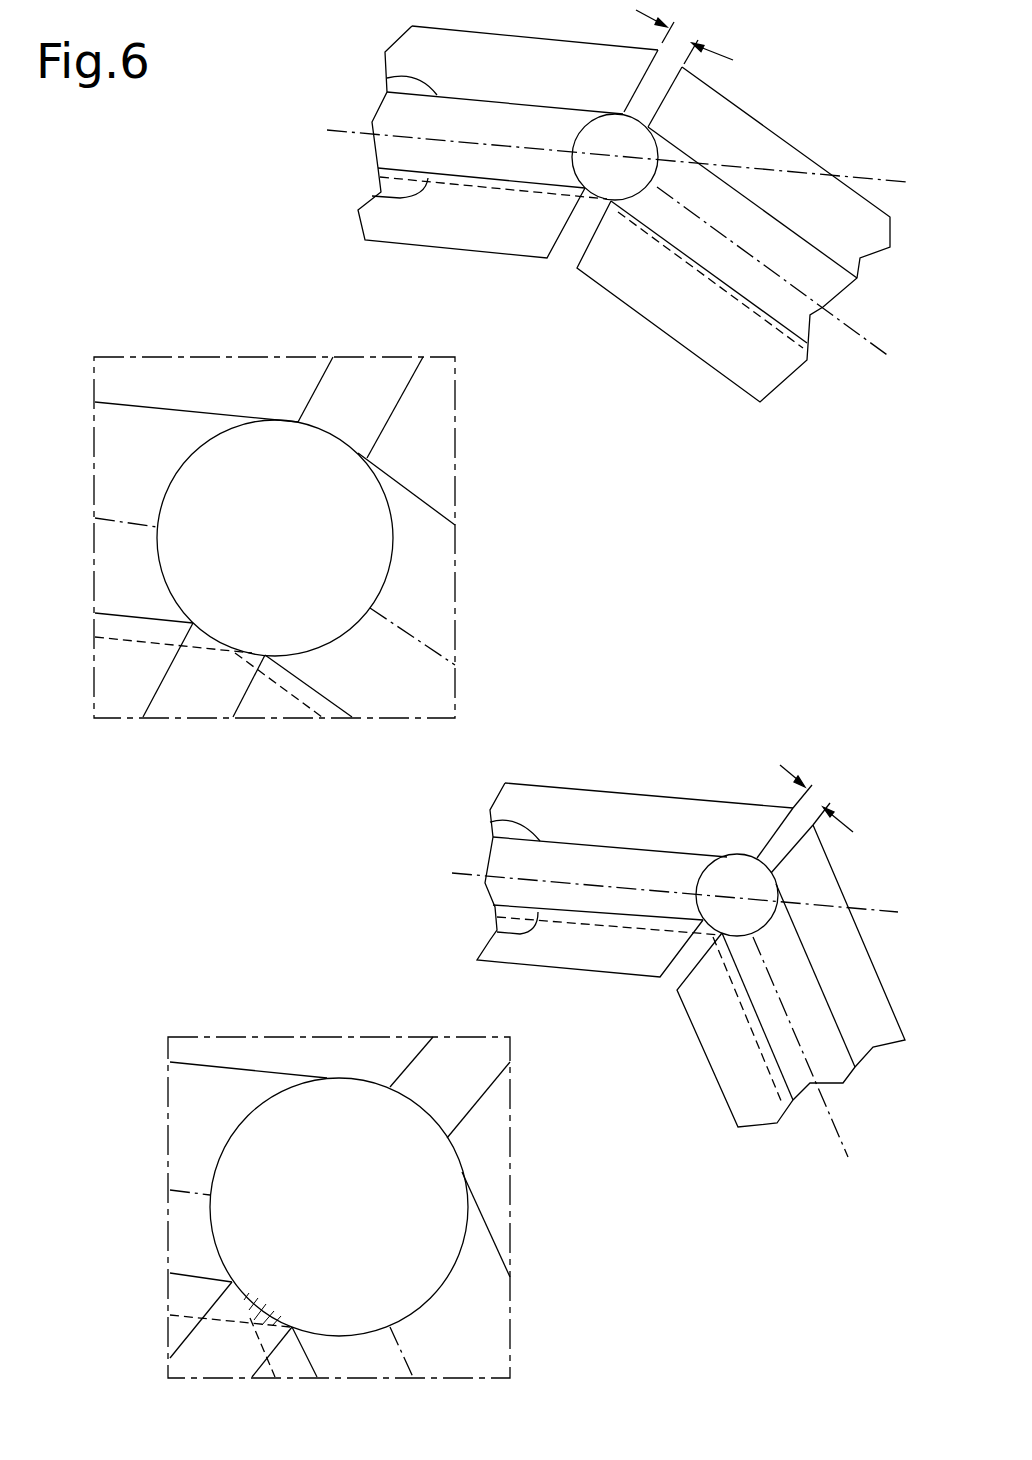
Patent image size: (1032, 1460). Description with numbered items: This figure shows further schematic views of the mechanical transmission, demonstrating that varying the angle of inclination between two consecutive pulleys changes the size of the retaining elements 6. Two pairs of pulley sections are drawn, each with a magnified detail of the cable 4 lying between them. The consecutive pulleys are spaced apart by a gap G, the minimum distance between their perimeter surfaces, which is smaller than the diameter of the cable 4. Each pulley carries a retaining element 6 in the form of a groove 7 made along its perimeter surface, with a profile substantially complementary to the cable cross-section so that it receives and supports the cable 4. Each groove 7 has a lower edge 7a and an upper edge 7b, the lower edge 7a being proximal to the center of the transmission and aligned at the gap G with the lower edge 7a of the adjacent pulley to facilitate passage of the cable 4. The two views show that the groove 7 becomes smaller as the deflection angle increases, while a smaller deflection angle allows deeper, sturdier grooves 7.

The cable 4 is at (632, 143).
The retaining element 6 is at (728, 362).
The groove 7 is at (484, 196).
The lower edge 7a is at (372, 196).
The upper edge 7b is at (387, 78).
The gap G is at (744, 420).